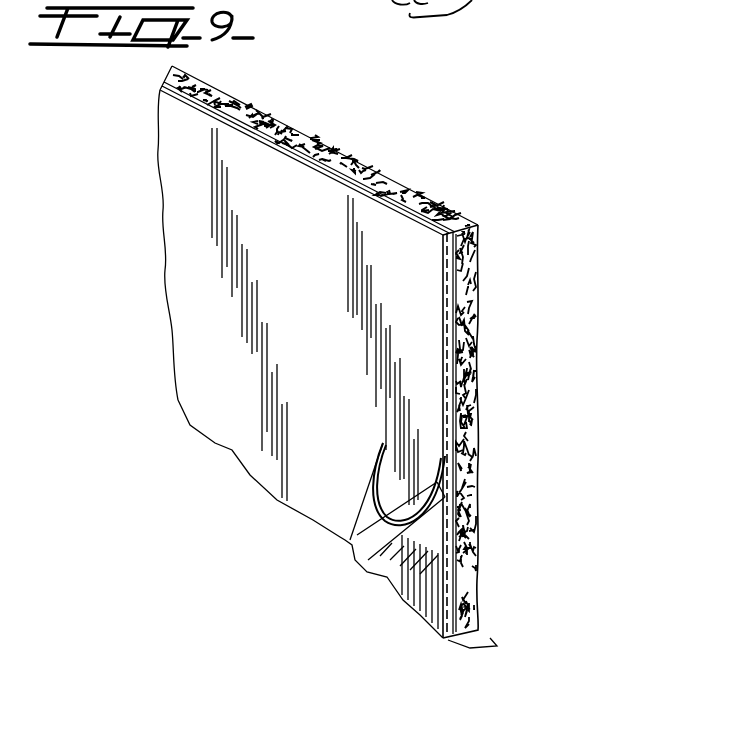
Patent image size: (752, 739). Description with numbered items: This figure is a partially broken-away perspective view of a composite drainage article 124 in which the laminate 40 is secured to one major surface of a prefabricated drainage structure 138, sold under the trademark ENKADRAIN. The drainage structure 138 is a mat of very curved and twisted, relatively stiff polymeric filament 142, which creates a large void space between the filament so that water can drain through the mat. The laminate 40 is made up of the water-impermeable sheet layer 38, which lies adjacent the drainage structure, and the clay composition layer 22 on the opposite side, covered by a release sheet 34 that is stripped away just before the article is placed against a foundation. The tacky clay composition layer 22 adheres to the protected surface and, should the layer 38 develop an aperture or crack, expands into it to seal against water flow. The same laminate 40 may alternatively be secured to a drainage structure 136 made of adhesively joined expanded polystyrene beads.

The laminate 40 is at (203, 391).
The composite article 124 is at (508, 225).
The polymeric filament 142 is at (470, 346).
The clay composition layer 22 is at (455, 262).
The water-impermeable sheet layer 38 is at (460, 290).
The release sheet 34 is at (352, 534).
The drainage structure 138 is at (490, 637).
The drainage structure 136 is at (482, 16).